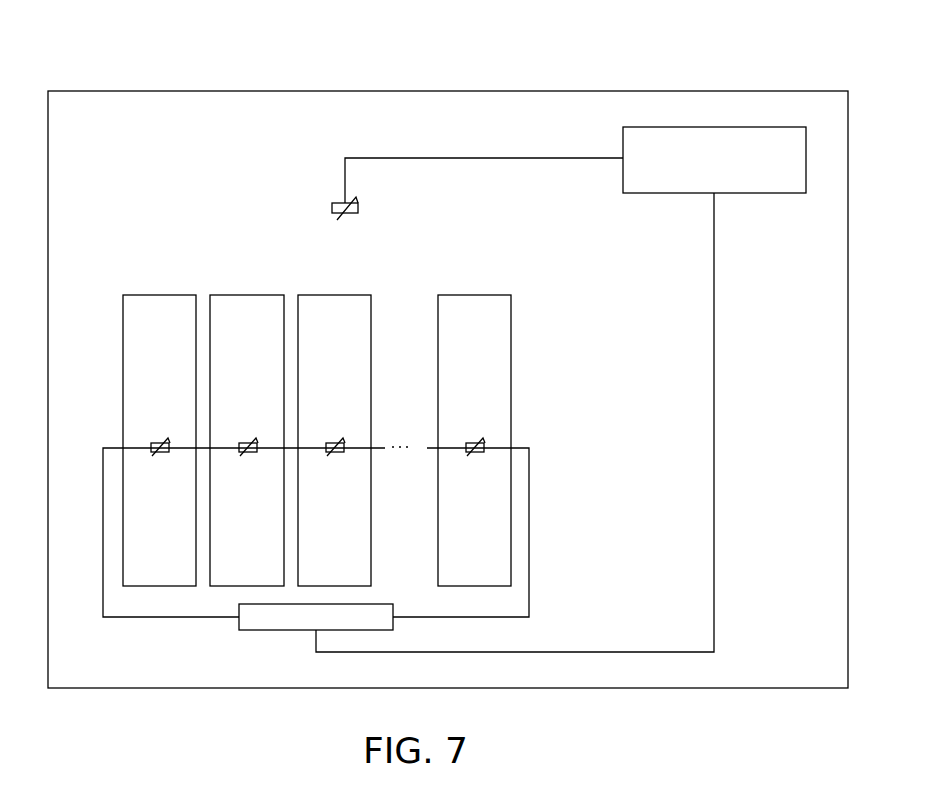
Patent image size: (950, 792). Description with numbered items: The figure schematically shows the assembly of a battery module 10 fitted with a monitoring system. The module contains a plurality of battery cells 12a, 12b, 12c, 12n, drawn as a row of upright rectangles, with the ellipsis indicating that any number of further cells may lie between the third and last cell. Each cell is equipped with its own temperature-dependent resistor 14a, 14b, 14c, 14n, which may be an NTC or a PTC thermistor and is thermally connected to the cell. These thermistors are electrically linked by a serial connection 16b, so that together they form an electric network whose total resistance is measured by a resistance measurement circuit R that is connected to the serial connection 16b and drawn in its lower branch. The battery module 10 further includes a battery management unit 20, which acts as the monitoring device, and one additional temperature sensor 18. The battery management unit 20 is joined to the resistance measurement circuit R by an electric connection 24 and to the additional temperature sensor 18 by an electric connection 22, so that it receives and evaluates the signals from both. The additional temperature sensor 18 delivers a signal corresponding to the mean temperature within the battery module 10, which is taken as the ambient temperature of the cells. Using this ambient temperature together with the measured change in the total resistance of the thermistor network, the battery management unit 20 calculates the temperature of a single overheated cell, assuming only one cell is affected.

The battery module 10 is at (122, 60).
The battery cell 12a is at (158, 295).
The battery cell 12b is at (245, 295).
The battery cell 12c is at (335, 295).
The battery cell 12n is at (475, 295).
The temperature-dependent resistor 14a is at (162, 462).
The temperature-dependent resistor 14b is at (250, 462).
The temperature-dependent resistor 14c is at (337, 462).
The temperature-dependent resistor 14n is at (477, 462).
The serial connection 16b is at (530, 512).
The additional temperature sensor 18 is at (330, 208).
The battery management unit 20 is at (757, 195).
The electric connection 22 is at (408, 163).
The electric connection 24 is at (716, 395).